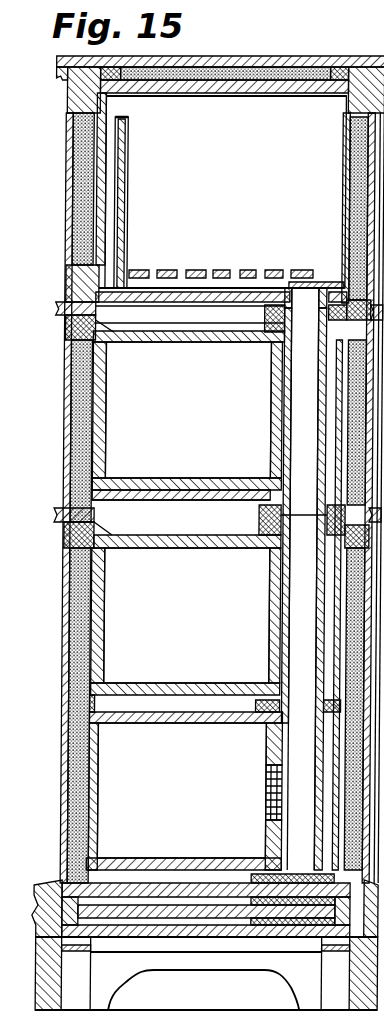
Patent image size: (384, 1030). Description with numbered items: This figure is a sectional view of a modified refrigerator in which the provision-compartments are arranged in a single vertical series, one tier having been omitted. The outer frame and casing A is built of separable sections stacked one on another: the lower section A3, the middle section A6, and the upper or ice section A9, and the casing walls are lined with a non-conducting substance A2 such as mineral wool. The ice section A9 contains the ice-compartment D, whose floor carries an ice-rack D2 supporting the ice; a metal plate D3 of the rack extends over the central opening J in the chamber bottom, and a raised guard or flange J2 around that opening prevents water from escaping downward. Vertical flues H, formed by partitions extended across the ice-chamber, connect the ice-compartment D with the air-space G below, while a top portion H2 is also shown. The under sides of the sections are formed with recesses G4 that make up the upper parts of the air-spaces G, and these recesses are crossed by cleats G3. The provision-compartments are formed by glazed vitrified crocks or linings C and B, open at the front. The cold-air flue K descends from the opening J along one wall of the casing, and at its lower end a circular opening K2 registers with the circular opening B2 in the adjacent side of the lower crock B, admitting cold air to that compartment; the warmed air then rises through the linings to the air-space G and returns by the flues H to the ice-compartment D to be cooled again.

The outer frame and casing A is at (68, 618).
The upper or ice section A9 is at (67, 208).
The non-conducting substance A2 is at (70, 386).
The middle section A6 is at (74, 456).
The lower section A3 is at (68, 814).
The crock or lining B is at (184, 791).
The circular opening B2 is at (271, 777).
The crock or lining C is at (187, 512).
The ice-compartment D is at (226, 192).
The ice-rack D2 is at (167, 291).
The metal plate D3 is at (293, 276).
The air-space G is at (196, 338).
The cleat G3 is at (258, 500).
The recess G4 is at (206, 318).
The flue H is at (112, 186).
The partition wall top H2 is at (120, 113).
The central opening J is at (313, 294).
The raised guard or flange J2 is at (323, 283).
The cold-air flue K is at (303, 579).
The circular opening K2 is at (290, 778).